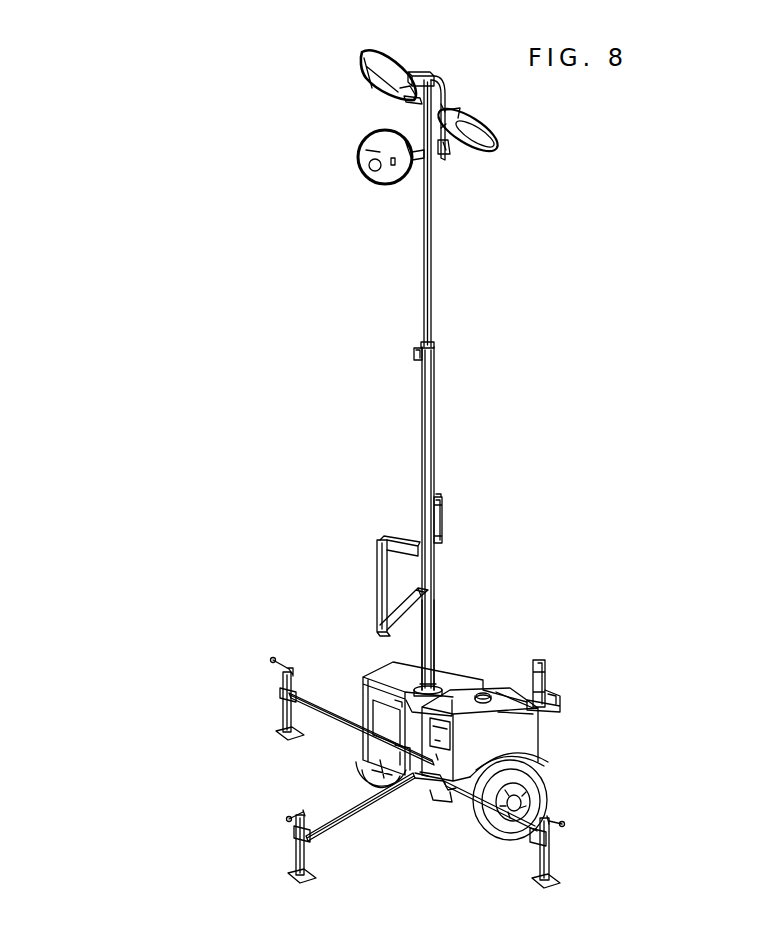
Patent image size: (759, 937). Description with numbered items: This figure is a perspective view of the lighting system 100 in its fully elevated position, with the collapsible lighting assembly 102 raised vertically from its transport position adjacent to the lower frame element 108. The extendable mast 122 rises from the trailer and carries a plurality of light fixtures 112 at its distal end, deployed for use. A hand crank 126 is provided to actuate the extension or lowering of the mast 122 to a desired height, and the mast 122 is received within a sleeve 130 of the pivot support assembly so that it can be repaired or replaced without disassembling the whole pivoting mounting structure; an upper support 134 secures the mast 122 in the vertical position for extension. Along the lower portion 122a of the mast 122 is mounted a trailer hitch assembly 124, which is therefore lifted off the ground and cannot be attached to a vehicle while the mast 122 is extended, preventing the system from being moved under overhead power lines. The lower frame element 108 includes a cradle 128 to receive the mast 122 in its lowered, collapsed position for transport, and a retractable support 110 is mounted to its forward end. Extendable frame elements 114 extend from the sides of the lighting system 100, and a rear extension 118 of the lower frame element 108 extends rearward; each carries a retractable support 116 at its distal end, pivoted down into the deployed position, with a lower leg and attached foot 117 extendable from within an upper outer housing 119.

The lighting system 100 is at (284, 518).
The collapsible lighting assembly 102 is at (420, 313).
The lower frame element 108 is at (527, 672).
The retractable support 110 is at (533, 705).
The light fixture 112 is at (367, 149).
The extendable frame element 114 is at (340, 727).
The retractable support 116 is at (286, 683).
The foot 117 is at (537, 873).
The rear extension 118 is at (375, 803).
The upper outer housing 119 is at (548, 866).
The extendable mast 122 is at (422, 435).
The lower portion of mast 122a is at (424, 641).
The trailer hitch assembly 124 is at (434, 518).
The hand crank 126 is at (410, 758).
The cradle 128 is at (560, 697).
The sleeve 130 is at (436, 692).
The upper support 134 is at (410, 678).